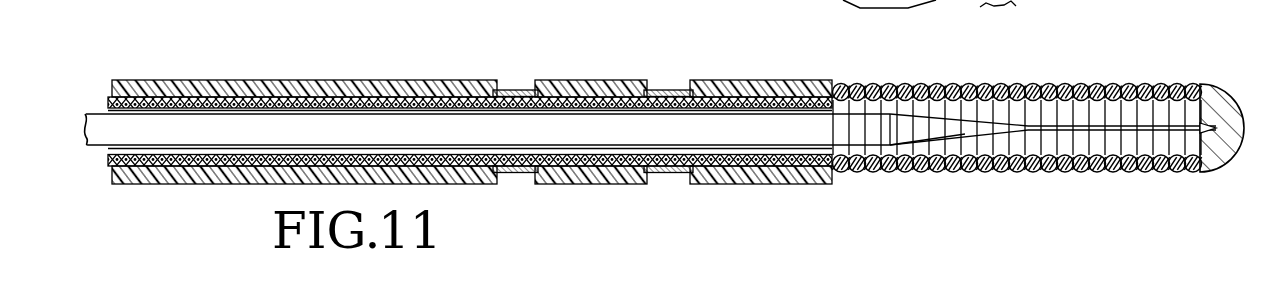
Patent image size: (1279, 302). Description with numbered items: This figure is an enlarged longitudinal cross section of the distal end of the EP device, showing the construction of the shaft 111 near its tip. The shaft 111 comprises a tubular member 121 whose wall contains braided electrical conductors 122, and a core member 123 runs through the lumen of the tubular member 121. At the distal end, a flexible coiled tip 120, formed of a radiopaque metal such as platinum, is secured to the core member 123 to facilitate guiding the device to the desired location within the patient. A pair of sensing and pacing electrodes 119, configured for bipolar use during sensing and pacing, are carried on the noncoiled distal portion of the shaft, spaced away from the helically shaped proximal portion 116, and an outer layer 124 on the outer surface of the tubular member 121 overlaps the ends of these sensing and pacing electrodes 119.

The elongated shaft 111 is at (309, 61).
The proximal portion 116 is at (1006, 19).
The sensing electrodes 119 is at (515, 95).
The flexible coiled tip 120 is at (1088, 170).
The tubular member 121 is at (112, 99).
The braided electrical conductors 122 is at (197, 100).
The core member 123 is at (420, 123).
The outer layer 124 is at (570, 184).